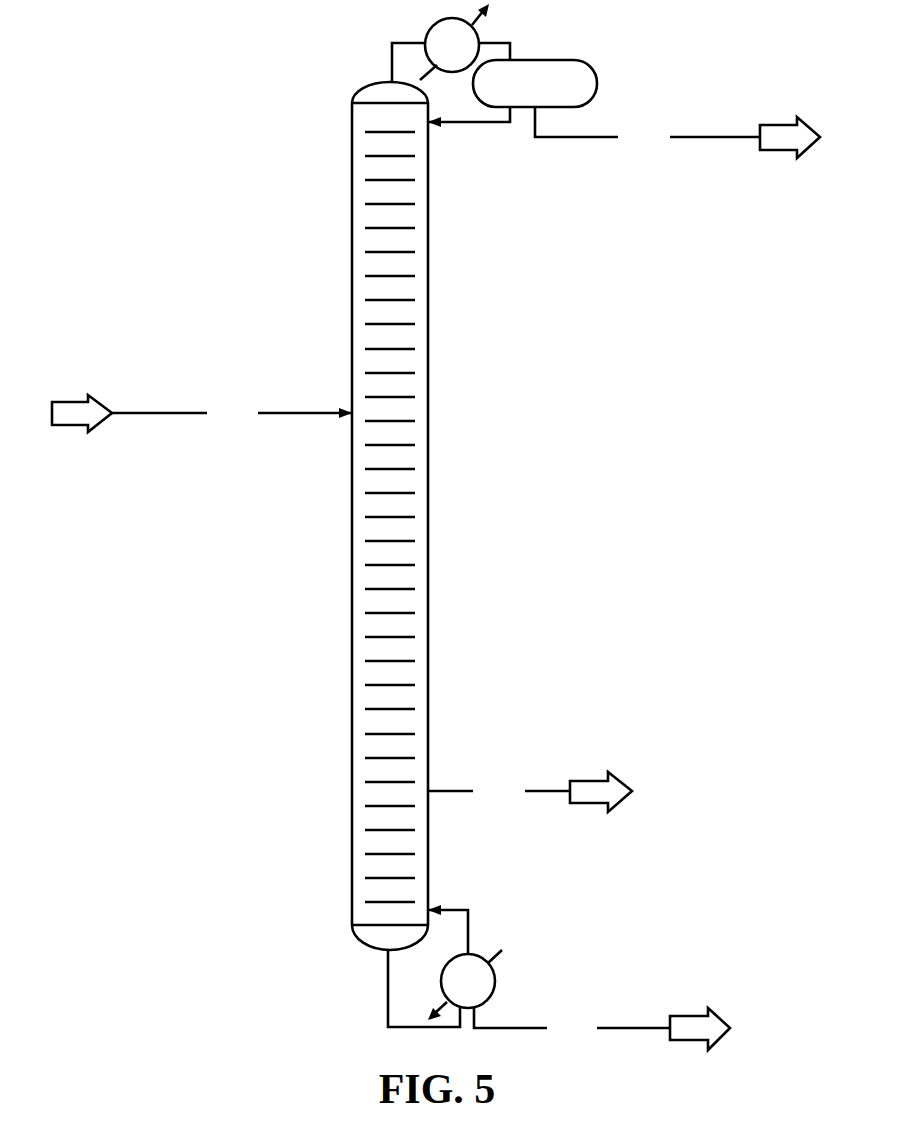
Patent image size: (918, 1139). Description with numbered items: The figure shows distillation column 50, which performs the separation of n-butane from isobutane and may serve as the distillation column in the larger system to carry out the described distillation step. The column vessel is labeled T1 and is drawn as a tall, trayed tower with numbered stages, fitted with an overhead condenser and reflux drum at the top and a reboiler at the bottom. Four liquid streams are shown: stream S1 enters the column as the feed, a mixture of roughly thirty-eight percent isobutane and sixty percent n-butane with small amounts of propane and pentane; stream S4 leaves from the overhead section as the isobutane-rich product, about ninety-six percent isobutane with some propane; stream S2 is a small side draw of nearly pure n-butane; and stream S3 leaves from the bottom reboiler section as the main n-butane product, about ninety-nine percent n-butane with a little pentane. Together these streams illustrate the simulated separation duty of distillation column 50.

The distillation column 50 is at (287, 27).
The distillation column T1 is at (457, 515).
The stream S1 is at (202, 414).
The stream S2 is at (530, 792).
The stream S3 is at (602, 1028).
The stream S4 is at (677, 132).